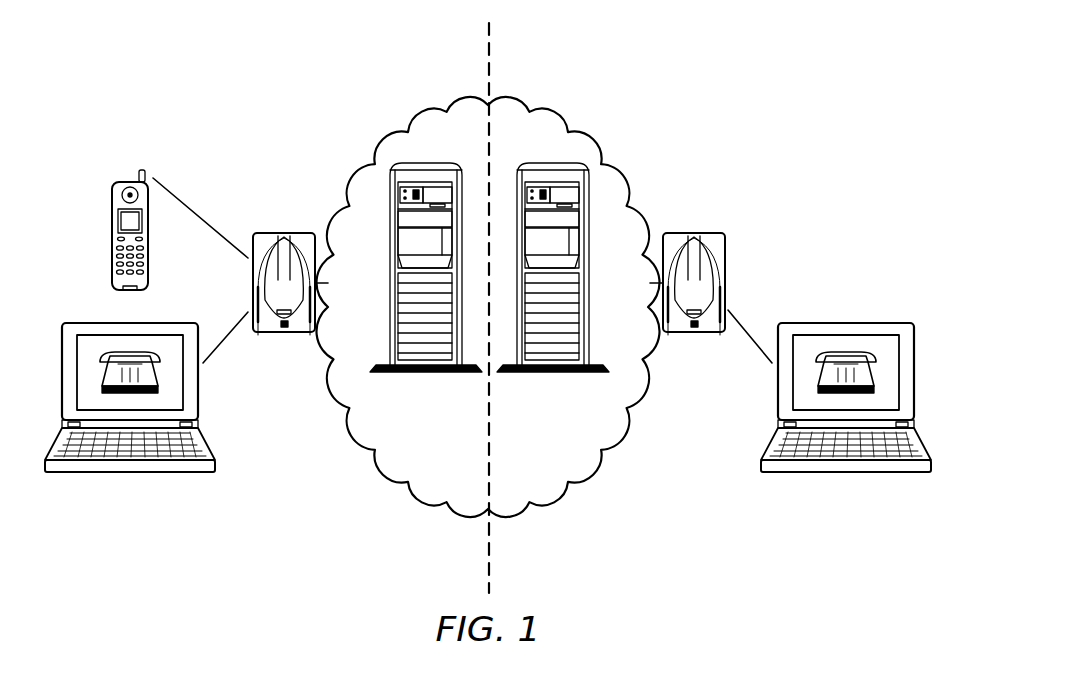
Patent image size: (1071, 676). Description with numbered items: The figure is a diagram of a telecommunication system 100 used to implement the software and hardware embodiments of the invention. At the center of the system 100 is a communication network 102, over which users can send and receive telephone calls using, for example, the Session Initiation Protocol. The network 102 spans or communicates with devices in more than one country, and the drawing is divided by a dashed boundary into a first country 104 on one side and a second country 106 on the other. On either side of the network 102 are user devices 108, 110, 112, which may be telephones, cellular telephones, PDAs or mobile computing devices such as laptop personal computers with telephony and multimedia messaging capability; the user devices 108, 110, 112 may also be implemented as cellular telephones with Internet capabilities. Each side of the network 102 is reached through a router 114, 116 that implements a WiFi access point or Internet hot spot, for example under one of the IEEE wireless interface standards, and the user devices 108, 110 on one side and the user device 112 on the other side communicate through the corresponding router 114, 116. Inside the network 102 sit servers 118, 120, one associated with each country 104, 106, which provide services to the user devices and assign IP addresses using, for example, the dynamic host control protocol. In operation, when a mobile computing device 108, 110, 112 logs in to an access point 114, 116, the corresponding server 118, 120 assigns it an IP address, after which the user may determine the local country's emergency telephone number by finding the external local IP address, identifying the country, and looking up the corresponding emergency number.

The telecommunication system 100 is at (345, 62).
The communication network 102 is at (576, 129).
The country 104 is at (508, 579).
The country 106 is at (468, 579).
The user device 108 is at (130, 473).
The user device 110 is at (127, 182).
The user device 112 is at (845, 473).
The router 114 is at (282, 233).
The router 116 is at (723, 250).
The server 118 is at (553, 373).
The server 120 is at (423, 373).